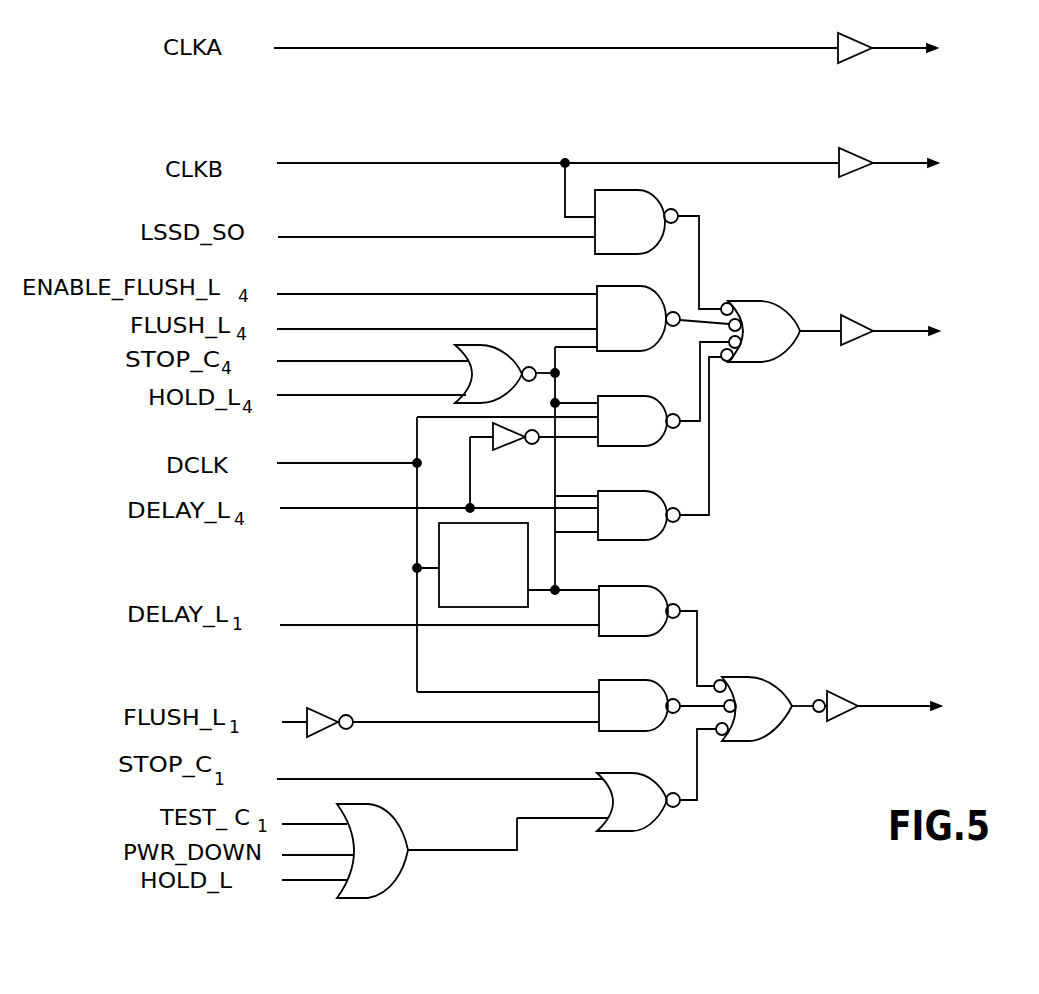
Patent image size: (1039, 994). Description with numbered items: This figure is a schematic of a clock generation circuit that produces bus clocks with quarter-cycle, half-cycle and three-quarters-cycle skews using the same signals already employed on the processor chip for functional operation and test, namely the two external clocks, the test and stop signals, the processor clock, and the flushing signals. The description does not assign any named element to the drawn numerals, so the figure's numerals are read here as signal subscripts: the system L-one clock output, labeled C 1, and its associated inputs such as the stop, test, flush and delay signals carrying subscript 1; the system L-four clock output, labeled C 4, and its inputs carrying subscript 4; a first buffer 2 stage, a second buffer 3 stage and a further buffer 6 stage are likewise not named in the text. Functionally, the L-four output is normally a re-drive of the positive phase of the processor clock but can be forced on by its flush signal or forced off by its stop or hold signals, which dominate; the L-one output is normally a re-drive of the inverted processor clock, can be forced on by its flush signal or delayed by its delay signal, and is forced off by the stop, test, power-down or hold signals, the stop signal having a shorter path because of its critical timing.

The C1 clock output stage (3-input NOR, inverter bubble, buffer) 1 is at (850, 709).
The -1/4 cycle delay block 2 is at (483, 565).
The ACLK output buffer 3 is at (640, 48).
The C4 clock output stage (4-input NOR and buffer) 4 is at (849, 331).
The BCLK output buffer 6 is at (643, 162).